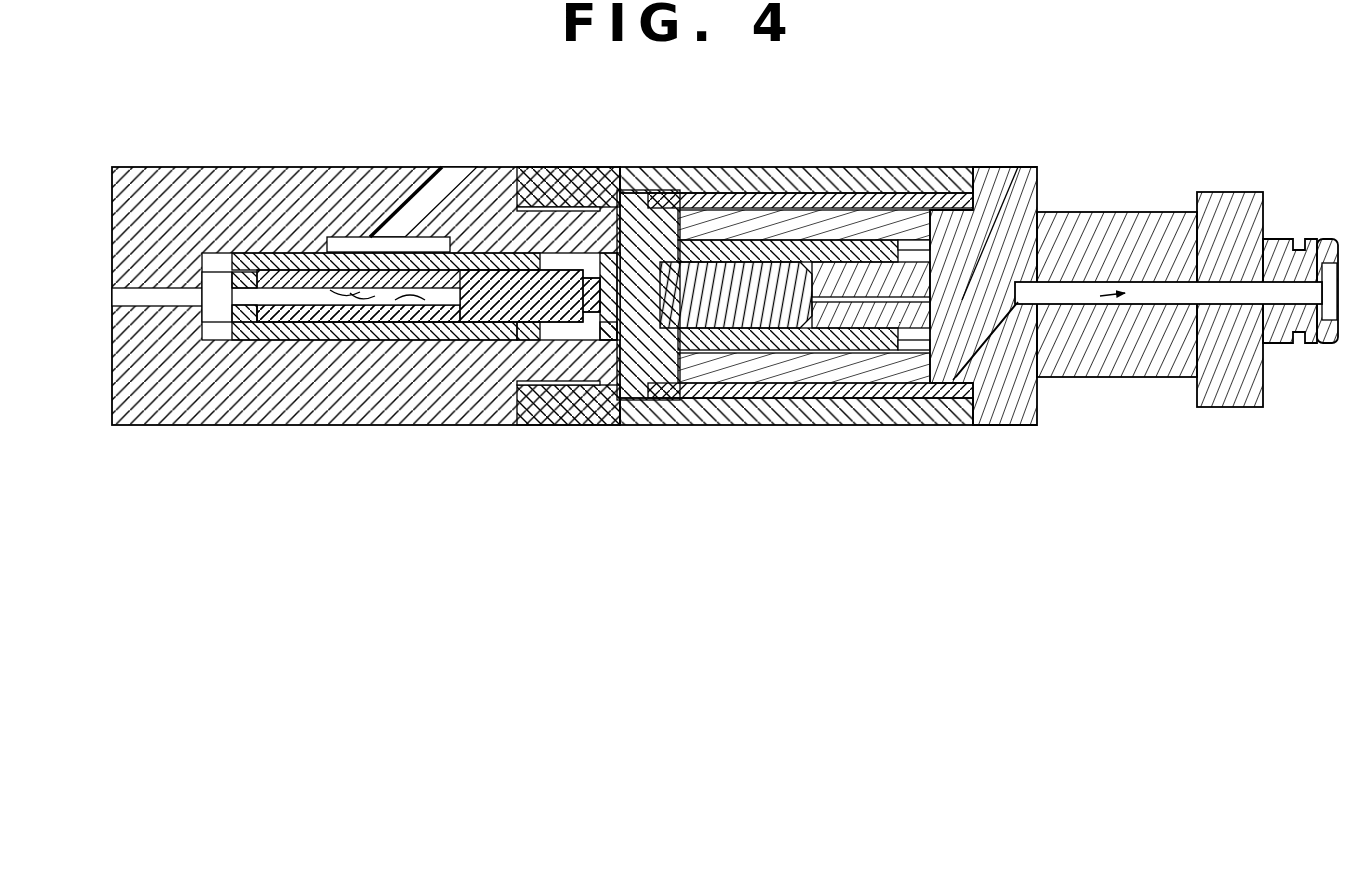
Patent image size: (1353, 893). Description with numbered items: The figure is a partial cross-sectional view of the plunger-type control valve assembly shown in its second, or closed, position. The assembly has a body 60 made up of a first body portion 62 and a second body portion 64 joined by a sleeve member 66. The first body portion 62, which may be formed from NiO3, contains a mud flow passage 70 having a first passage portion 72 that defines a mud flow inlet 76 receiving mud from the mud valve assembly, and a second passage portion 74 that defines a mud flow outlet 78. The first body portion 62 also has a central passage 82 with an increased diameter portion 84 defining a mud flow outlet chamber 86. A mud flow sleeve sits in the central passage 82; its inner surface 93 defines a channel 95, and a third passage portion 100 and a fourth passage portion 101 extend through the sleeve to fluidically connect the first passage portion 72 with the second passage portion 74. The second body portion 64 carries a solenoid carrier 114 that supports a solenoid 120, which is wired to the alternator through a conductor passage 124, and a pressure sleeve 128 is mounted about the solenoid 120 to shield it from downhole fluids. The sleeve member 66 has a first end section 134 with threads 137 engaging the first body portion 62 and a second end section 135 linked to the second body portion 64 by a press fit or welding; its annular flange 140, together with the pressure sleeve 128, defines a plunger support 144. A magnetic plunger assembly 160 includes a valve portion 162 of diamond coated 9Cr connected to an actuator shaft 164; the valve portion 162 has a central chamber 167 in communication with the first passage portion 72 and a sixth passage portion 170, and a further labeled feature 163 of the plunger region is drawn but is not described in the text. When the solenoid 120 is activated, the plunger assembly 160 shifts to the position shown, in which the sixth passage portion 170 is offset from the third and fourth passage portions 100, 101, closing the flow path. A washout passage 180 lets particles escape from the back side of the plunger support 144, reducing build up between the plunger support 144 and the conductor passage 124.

The body 60 is at (981, 444).
The first body portion 62 is at (377, 413).
The second body portion 64 is at (1228, 200).
The sleeve member 66 is at (761, 163).
The mud flow passage 70 is at (160, 330).
The first passage portion 72 is at (125, 288).
The second passage portion 74 is at (377, 241).
The mud flow inlet 76 is at (120, 300).
The mud flow outlet 78 is at (465, 167).
The central passage 82 is at (480, 322).
The increased diameter portion 84 is at (340, 350).
The mud flow outlet chamber 86 is at (367, 235).
The inner surface 93 is at (195, 285).
The channel 95 is at (230, 325).
The third passage portion 100 is at (347, 257).
The fourth passage portion 101 is at (430, 247).
The solenoid carrier 114 is at (879, 264).
The solenoid 120 is at (915, 350).
The conductor passage 124 is at (1072, 320).
The pressure sleeve 128 is at (839, 197).
The first end section 134 is at (525, 185).
The second end section 135 is at (972, 167).
The threads 137 is at (563, 207).
The annular flange 140 is at (633, 220).
The plunger support 144 is at (666, 280).
The magnetic plunger assembly 160 is at (524, 333).
The valve portion 162 is at (569, 339).
The upper sleeve band 163 is at (297, 257).
The actuator shaft 164 is at (778, 318).
The central chamber 167 is at (296, 307).
The sixth passage portion 170 is at (467, 345).
The washout passage 180 is at (1020, 175).